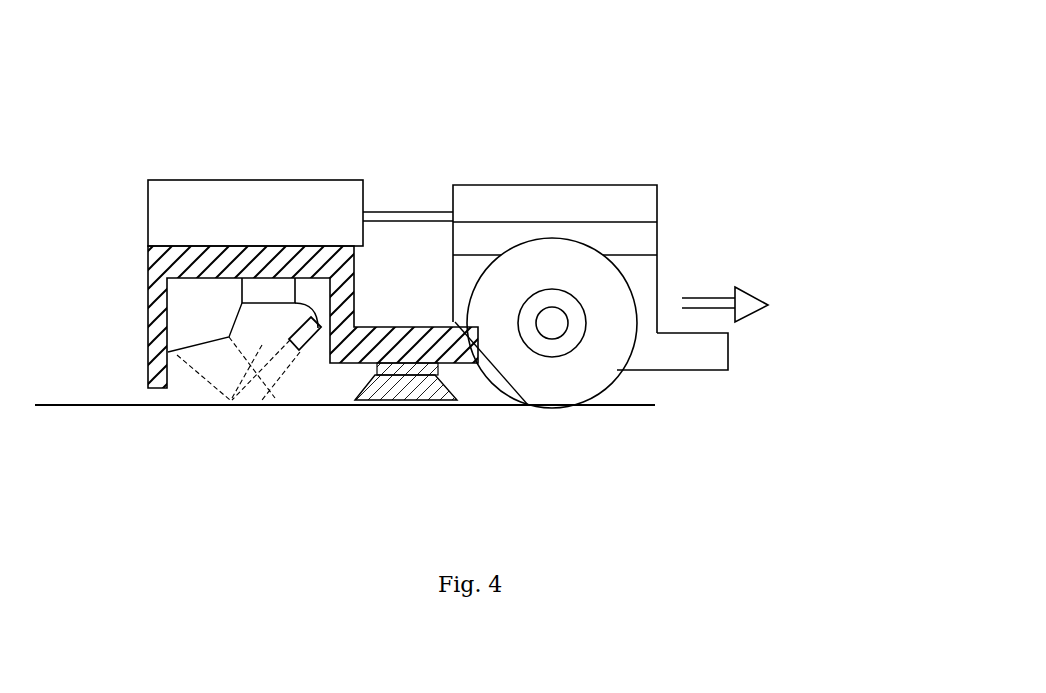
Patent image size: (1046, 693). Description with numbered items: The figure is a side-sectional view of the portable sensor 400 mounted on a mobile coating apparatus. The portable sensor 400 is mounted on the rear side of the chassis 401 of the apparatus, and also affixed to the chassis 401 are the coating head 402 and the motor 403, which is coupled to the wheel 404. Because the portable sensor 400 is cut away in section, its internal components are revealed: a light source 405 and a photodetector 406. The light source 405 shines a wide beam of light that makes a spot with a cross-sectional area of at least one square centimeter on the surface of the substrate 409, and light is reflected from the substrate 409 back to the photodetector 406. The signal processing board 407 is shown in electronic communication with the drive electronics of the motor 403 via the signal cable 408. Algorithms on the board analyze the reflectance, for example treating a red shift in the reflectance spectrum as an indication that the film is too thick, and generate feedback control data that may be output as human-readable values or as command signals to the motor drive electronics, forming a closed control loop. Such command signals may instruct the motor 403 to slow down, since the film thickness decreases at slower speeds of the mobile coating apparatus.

The portable sensor 400 is at (580, 60).
The chassis 401 is at (720, 357).
The coating head 402 is at (415, 400).
The motor 403 is at (637, 245).
The wheel 404 is at (582, 382).
The light source 405 is at (318, 337).
The photodetector 406 is at (193, 328).
The signal processing board 407 is at (163, 207).
The signal cable 408 is at (400, 210).
The substrate 409 is at (93, 405).